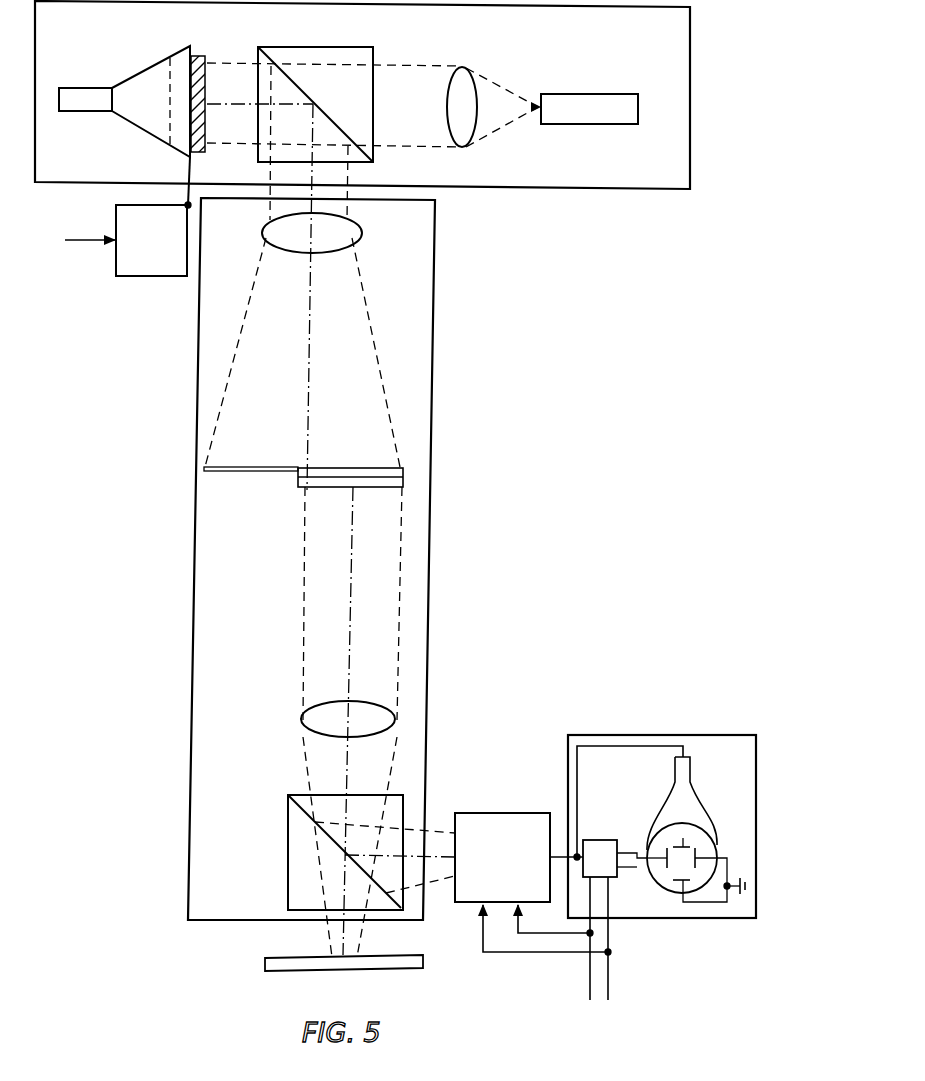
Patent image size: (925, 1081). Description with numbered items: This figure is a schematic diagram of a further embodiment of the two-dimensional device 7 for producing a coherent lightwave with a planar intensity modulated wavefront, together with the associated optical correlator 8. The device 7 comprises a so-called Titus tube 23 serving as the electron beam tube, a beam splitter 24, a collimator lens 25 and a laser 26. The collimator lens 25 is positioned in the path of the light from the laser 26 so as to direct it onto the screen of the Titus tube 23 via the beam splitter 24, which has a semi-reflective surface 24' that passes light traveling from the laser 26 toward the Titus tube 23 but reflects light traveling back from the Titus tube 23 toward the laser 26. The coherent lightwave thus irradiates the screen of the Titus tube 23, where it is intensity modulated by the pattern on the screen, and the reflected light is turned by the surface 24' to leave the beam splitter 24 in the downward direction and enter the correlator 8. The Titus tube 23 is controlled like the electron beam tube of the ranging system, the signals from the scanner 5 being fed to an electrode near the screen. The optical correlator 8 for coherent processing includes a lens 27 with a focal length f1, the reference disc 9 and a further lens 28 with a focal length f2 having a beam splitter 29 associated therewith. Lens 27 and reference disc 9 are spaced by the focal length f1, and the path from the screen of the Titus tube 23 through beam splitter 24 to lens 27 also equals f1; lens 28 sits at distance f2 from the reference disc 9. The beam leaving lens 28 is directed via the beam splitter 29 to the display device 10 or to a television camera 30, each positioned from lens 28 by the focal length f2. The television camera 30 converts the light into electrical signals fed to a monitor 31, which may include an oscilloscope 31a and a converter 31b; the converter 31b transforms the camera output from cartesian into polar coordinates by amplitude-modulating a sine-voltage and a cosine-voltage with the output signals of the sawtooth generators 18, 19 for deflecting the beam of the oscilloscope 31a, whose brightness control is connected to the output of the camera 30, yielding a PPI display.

The scanner 5 is at (156, 268).
The device 7 is at (578, 184).
The optical correlator 8 is at (195, 737).
The reference disc 9 is at (397, 470).
The display device 10 is at (418, 962).
The sawtooth generator 18 is at (587, 986).
The sawtooth generator 19 is at (610, 986).
The Titus tube 23 is at (128, 91).
The beam splitter 24 is at (315, 87).
The semi-reflective surface 24' is at (315, 104).
The collimator lens 25 is at (465, 72).
The laser 26 is at (585, 101).
The lens 27 is at (350, 228).
The lens 28 is at (318, 717).
The beam splitter 29 is at (292, 810).
The television camera 30 is at (504, 816).
The monitor 31 is at (703, 740).
The oscilloscope 31a is at (690, 803).
The converter 31b is at (606, 840).
The focal length f1 is at (310, 349).
The focal length f2 is at (350, 627).